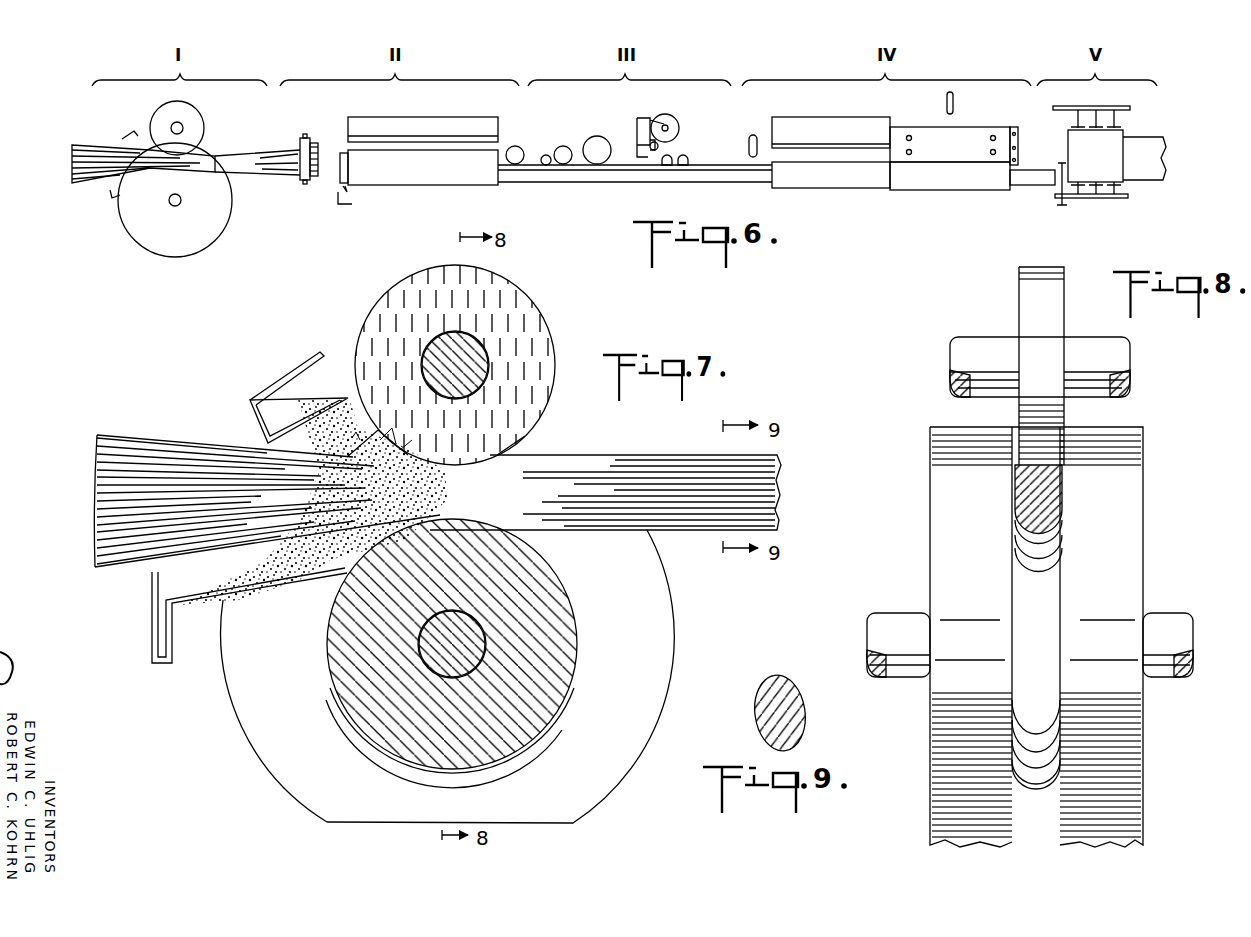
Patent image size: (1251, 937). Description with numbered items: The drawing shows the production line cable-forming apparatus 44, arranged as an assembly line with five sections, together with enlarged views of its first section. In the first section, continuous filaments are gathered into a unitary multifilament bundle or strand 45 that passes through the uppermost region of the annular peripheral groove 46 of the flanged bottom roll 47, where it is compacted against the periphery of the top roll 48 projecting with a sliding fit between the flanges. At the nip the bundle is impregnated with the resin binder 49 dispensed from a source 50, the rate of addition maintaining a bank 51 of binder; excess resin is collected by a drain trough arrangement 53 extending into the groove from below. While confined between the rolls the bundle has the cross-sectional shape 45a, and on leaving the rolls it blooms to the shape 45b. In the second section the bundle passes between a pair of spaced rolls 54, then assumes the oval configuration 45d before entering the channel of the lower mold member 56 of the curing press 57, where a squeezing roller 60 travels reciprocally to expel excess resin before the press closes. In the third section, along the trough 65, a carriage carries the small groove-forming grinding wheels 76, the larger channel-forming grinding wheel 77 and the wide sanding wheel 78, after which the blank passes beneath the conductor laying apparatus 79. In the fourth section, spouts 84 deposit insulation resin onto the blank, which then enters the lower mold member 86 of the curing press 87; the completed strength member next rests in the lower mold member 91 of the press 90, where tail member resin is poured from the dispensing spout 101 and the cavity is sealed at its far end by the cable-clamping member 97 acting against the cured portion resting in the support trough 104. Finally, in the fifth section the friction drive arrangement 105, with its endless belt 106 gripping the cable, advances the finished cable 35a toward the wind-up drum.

In FIG. 6, the cable-forming apparatus 44 is at (120, 50).
In FIG. 6, the multifilament bundle or strand 45 is at (78, 188).
In FIG. 7, the multifilament bundle or strand 45 is at (160, 452).
In FIG. 8, the impregnated filament bundle cross-sectional shape 45a is at (1050, 492).
In FIG. 6, the impregnated filament bundle 45b is at (246, 157).
In FIG. 9, the impregnated filament bundle 45b is at (778, 684).
In FIG. 6, the impregnated filament bundle 45d is at (314, 180).
In FIG. 8, the annular peripheral channel or groove 46 is at (1050, 570).
In FIG. 6, the flanged bottom roll 47 is at (208, 226).
In FIG. 7, the flanged bottom roll 47 is at (664, 645).
In FIG. 8, the flanged bottom roll 47 is at (955, 560).
In FIG. 7, the top roll 48 is at (540, 333).
In FIG. 8, the top roll 48 is at (1021, 302).
In FIG. 7, the resin binder 49 is at (250, 410).
In FIG. 7, the source of resin binder 50 is at (298, 373).
In FIG. 7, the bank of binder 51 is at (386, 455).
In FIG. 7, the drain trough arrangement 53 is at (212, 610).
In FIG. 6, the pair of spaced rolls 54 is at (312, 140).
In FIG. 6, the lower mold member 56 is at (410, 172).
In FIG. 6, the curing press 57 is at (468, 98).
In FIG. 6, the squeezing roller 60 is at (519, 146).
In FIG. 6, the trough 65 is at (582, 182).
In FIG. 6, the groove-forming grinding wheels 76 is at (546, 166).
In FIG. 6, the channel-forming grinding wheel 77 is at (564, 146).
In FIG. 6, the grinding or sanding wheel 78 is at (598, 138).
In FIG. 6, the conductor laying apparatus 79 is at (648, 106).
In FIG. 6, the spouts 84 is at (748, 146).
In FIG. 6, the lower mold member 86 is at (822, 178).
In FIG. 6, the curing press 87 is at (850, 92).
In FIG. 6, the press 90 is at (978, 124).
In FIG. 6, the lower mold member 91 is at (925, 182).
In FIG. 6, the cable-clamping member 97 is at (1018, 128).
In FIG. 6, the dispensing nozzle or pouring spout 101 is at (946, 102).
In FIG. 6, the support trough 104 is at (1032, 180).
In FIG. 6, the friction drive arrangement 105 is at (1112, 202).
In FIG. 6, the endless belt 106 is at (1122, 136).
In FIG. 6, the finished cable 35a is at (1164, 152).